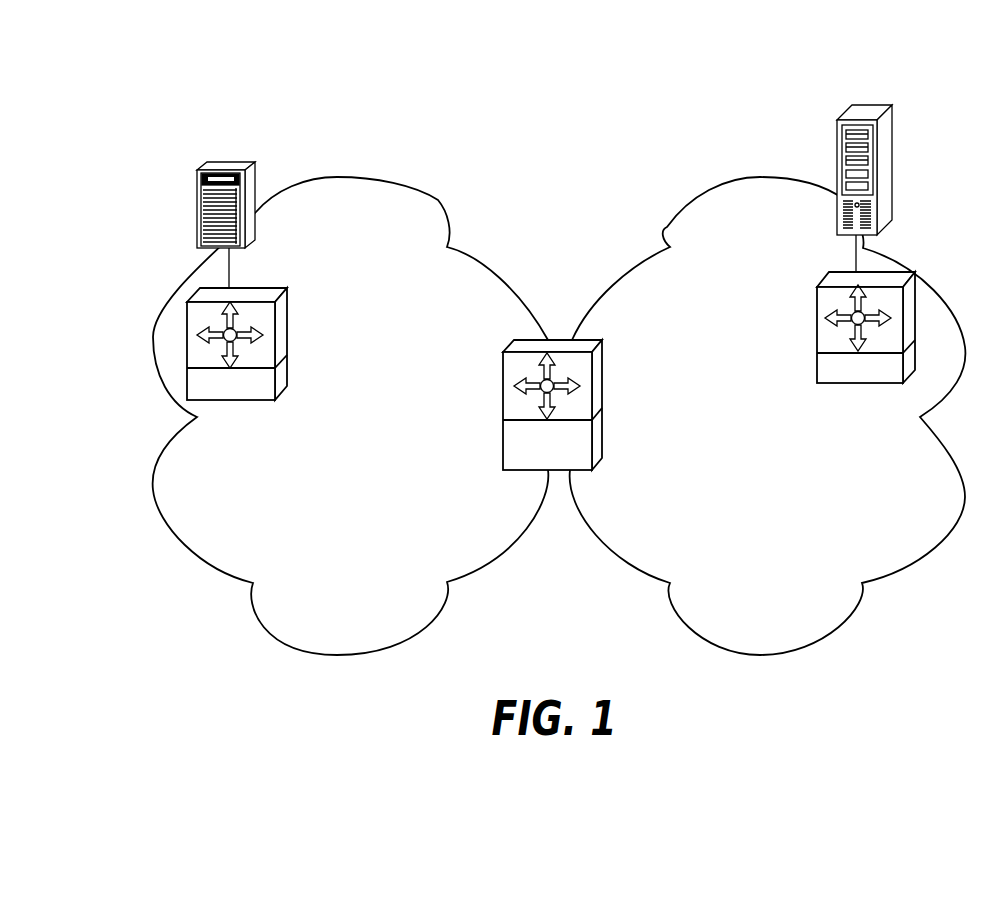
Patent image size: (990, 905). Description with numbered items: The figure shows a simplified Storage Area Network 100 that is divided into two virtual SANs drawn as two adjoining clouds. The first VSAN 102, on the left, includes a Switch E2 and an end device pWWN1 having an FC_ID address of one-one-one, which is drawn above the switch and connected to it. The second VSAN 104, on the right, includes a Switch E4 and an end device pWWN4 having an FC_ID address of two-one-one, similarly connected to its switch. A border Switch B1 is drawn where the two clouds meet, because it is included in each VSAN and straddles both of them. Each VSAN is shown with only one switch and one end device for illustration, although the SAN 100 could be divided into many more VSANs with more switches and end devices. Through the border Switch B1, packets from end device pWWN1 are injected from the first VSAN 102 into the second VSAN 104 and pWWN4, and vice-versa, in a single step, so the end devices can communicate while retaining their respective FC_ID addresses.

The Storage Area Network (SAN) 100 is at (160, 724).
The first VSAN 102 is at (437, 200).
The second VSAN 104 is at (722, 178).
The Switch E2 is at (222, 344).
The border Switch B1 is at (552, 386).
The Switch E4 is at (885, 327).